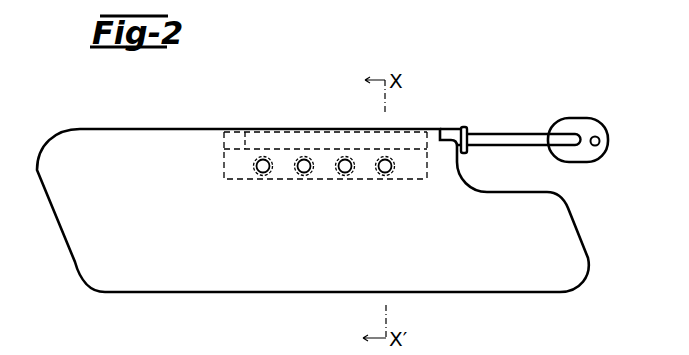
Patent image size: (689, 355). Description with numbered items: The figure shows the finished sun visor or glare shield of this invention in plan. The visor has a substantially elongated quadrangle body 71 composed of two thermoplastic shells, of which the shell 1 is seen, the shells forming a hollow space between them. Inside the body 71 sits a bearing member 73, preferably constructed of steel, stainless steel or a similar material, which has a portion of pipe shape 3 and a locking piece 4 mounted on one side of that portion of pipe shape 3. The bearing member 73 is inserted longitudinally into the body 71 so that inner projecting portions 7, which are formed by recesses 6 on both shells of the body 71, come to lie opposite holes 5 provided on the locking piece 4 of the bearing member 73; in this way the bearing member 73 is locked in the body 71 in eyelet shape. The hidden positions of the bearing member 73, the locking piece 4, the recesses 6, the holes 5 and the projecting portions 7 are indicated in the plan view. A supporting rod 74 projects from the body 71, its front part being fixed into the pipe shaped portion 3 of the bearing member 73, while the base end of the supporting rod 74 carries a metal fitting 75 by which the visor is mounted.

The thermoplastic shell 1 is at (137, 283).
The portion of pipe shape 3 is at (308, 138).
The locking piece 4 is at (424, 178).
The holes 5 is at (336, 150).
The recesses 6 is at (261, 158).
The inner projecting portions 7 is at (224, 135).
The body 71 is at (588, 247).
The bearing member 73 is at (243, 131).
The supporting rod 74 is at (505, 133).
The metal fitting 75 is at (587, 118).